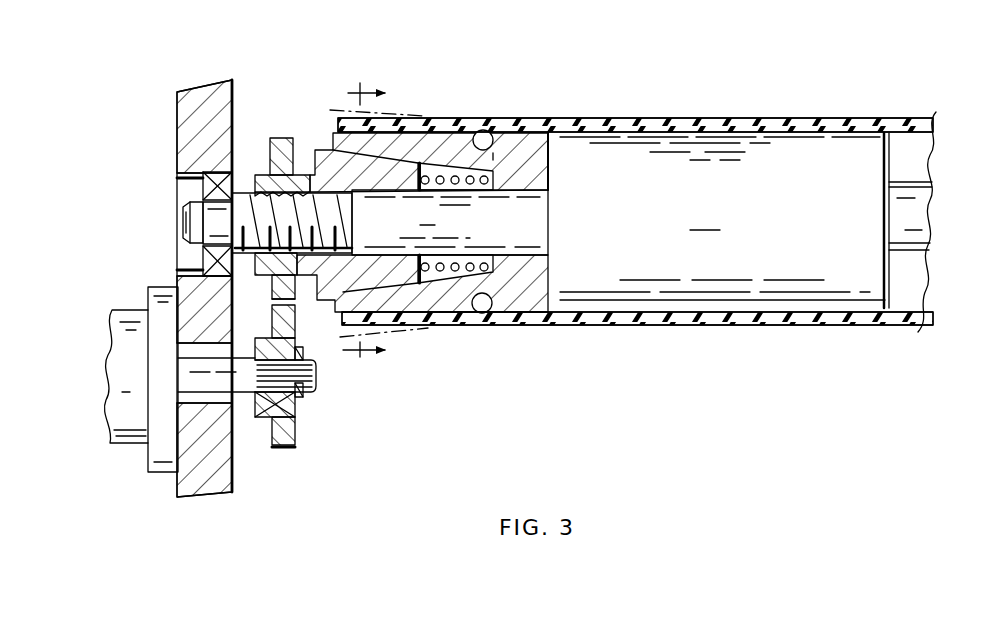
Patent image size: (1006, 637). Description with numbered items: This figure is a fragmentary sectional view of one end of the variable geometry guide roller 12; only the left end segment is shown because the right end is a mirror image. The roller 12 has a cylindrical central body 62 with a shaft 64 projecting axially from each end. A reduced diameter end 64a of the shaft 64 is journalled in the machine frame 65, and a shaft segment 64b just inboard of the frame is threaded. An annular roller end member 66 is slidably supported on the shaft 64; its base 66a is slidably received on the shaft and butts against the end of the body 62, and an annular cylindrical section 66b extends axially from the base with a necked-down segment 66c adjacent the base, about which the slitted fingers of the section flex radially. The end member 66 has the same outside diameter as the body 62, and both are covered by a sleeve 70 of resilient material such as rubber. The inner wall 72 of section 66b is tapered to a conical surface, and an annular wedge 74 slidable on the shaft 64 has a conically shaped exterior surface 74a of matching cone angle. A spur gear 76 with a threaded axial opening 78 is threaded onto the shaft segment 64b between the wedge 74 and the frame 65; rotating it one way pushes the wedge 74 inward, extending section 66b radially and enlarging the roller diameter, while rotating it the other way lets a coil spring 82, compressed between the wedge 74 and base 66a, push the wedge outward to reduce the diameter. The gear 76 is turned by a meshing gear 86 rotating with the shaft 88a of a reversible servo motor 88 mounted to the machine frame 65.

The roller 12 is at (590, 353).
The cylindrical central body 62 is at (668, 282).
The shaft 64 is at (547, 210).
The reduced diameter end 64a is at (213, 225).
The threaded shaft segment 64b is at (243, 193).
The machine frame 65 is at (180, 139).
The annular roller end member 66 is at (530, 143).
The base 66a is at (547, 160).
The annular cylindrical section 66b is at (452, 303).
The necked-down segment 66c is at (493, 313).
The sleeve 70 is at (655, 122).
The inner wall 72 is at (437, 170).
The annular wedge 74 is at (328, 148).
The conically shaped exterior surface 74a is at (390, 287).
The spur gear 76 is at (283, 138).
The threaded axial opening 78 is at (181, 245).
The coil spring 82 is at (485, 183).
The meshing gear 86 is at (282, 447).
The servo motor 88 is at (128, 317).
The motor shaft 88a is at (285, 410).